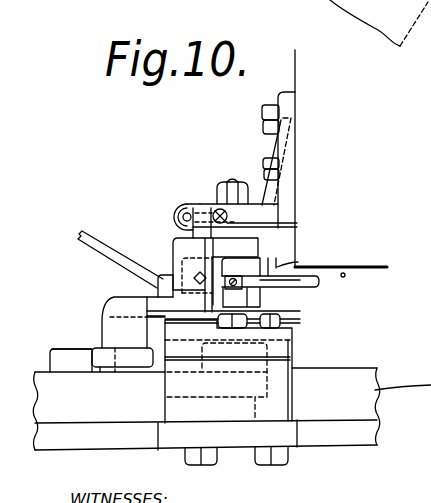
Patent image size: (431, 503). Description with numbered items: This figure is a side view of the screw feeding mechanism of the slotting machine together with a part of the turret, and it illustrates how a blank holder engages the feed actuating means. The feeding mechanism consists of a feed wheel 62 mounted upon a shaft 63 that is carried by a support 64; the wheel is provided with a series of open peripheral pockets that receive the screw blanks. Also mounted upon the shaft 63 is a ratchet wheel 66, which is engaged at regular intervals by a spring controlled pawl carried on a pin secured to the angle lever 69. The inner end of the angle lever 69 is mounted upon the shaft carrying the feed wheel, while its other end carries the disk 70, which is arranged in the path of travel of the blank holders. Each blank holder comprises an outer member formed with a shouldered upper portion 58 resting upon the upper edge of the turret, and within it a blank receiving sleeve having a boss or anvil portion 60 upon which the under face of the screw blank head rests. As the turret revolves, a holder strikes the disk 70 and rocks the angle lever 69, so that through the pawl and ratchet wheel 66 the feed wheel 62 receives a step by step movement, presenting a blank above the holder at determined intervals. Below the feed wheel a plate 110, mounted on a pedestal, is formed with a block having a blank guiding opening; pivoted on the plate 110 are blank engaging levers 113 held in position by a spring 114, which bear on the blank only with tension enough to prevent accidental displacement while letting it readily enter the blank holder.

The shouldered upper portion 58 is at (52, 362).
The boss or anvil portion 60 is at (77, 348).
The wheel 62 is at (296, 291).
The shaft 63 is at (216, 192).
The support 64 is at (283, 216).
The ratchet wheel 66 is at (281, 263).
The angle lever 69 is at (153, 298).
The disk 70 is at (103, 347).
The plate 110 is at (290, 345).
The blank engaging levers 113 is at (280, 317).
The spring 114 is at (287, 323).